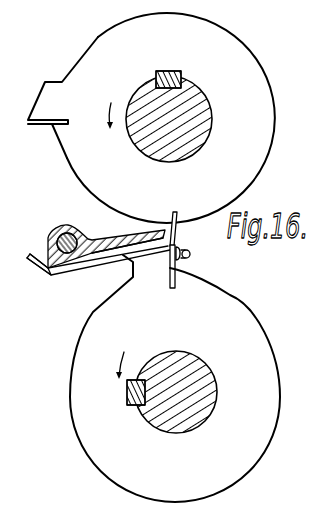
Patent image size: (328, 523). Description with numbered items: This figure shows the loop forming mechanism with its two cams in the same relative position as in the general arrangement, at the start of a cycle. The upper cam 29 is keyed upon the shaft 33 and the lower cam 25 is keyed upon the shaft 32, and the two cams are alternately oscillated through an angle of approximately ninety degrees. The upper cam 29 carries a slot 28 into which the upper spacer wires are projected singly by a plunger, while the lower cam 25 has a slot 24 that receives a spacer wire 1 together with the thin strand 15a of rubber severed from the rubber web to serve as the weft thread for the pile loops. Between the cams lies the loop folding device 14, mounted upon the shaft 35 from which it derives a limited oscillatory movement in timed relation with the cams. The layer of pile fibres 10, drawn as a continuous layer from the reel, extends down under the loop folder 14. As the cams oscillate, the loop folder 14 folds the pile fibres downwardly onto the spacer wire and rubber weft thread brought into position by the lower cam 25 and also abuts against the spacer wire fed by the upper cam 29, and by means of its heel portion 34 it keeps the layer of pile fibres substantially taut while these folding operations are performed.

The cam 29 is at (171, 118).
The slot 28 is at (44, 124).
The shaft 33 is at (202, 142).
The shaft 35 is at (48, 262).
The loop folding device 14 is at (95, 234).
The material for forming the loops 10 is at (98, 271).
The heel portion 34 is at (53, 274).
The thin strand 15a is at (170, 217).
The spacer wires 1 is at (190, 253).
The slot 24 is at (175, 283).
The cam 25 is at (175, 378).
The shaft 32 is at (187, 363).